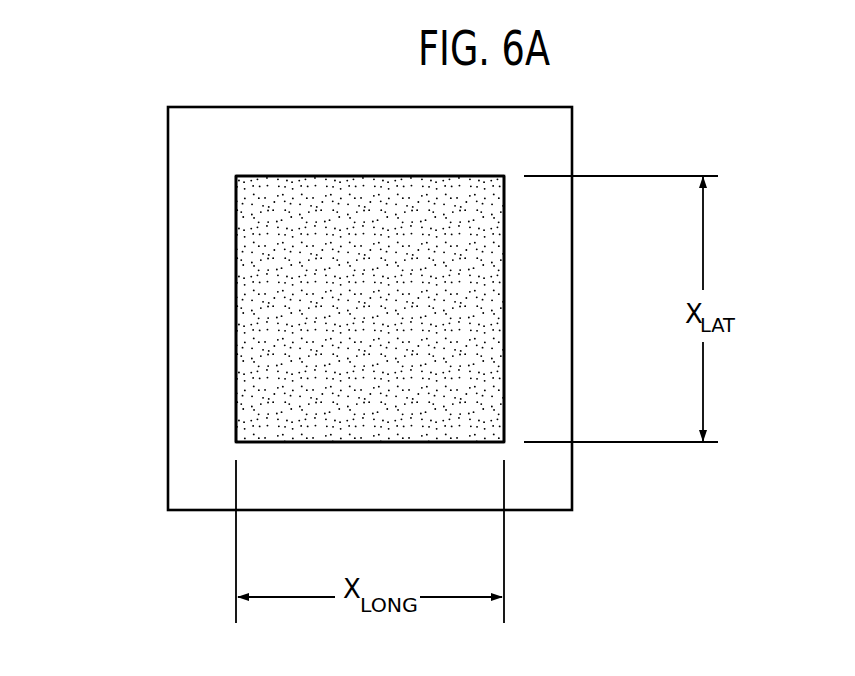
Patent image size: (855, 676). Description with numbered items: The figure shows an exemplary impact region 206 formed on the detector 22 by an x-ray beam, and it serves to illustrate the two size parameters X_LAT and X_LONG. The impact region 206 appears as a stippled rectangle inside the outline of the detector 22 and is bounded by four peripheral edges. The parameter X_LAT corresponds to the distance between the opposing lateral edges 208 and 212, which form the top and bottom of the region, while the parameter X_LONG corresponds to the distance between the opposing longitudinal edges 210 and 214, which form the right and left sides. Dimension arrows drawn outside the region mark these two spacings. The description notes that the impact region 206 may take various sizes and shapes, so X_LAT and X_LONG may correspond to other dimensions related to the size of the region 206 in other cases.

The detector 22 is at (168, 212).
The impact region 206 is at (495, 396).
The lateral edge 208 is at (370, 176).
The longitudinal edge 210 is at (505, 303).
The lateral edge 212 is at (367, 443).
The longitudinal edge 214 is at (236, 313).